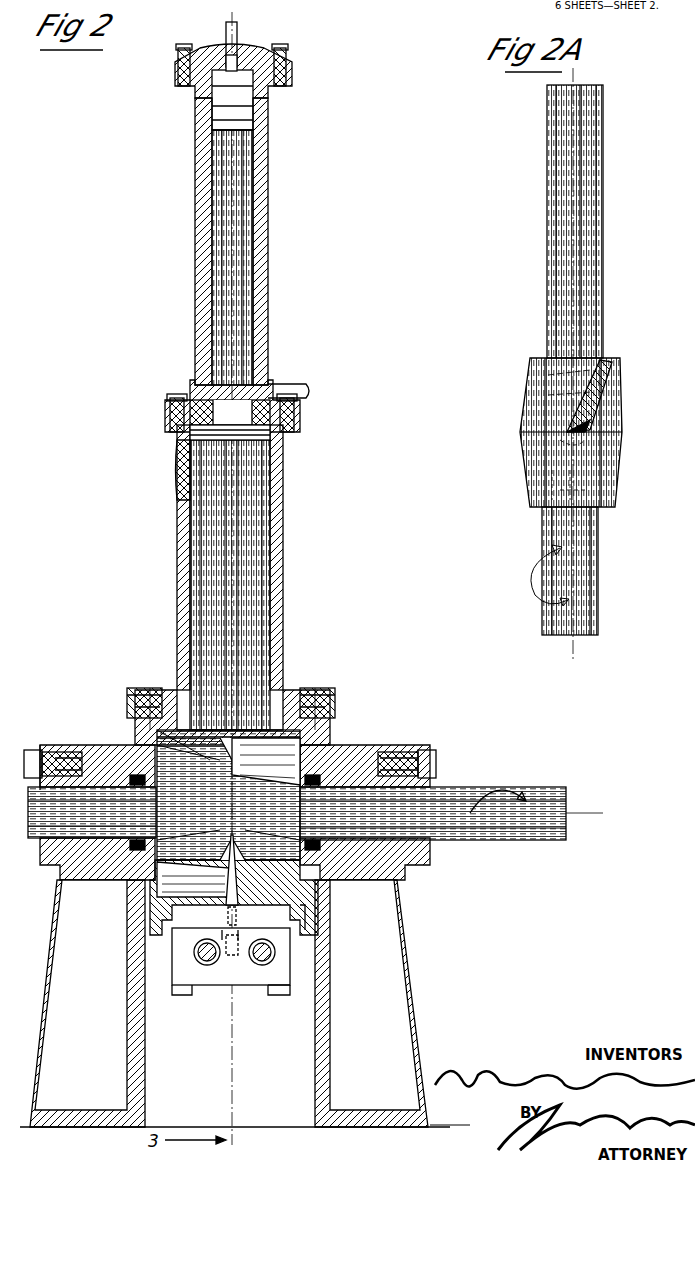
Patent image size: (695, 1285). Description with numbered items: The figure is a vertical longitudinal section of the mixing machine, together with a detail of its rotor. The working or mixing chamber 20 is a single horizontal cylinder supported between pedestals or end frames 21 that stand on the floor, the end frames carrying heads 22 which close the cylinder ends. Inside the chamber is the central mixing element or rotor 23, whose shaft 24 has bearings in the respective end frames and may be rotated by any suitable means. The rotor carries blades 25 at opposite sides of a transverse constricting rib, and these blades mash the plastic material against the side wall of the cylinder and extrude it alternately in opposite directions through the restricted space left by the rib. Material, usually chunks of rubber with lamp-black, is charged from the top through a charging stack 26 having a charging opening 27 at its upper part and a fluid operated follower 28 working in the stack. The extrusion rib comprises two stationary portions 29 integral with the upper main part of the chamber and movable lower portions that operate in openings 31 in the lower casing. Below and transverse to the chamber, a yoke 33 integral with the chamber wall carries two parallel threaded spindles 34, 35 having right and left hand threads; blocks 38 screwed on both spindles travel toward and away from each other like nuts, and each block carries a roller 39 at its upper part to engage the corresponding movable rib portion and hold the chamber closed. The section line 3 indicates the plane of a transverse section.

In FIG. 2, the axis / section line 3 is at (220, 586).
In FIG. 2, the working or mixing chamber 20 is at (300, 928).
In FIG. 2, the pedestals or end frames 21 is at (229, 1003).
In FIG. 2, the heads 22 is at (135, 692).
In FIG. 2, the mixing element or rotor 23 is at (228, 795).
In FIG. 2A, the mixing element or rotor 23 is at (571, 432).
In FIG. 2, the shaft 24 is at (315, 813).
In FIG. 2A, the shaft 24 is at (567, 360).
In FIG. 2, the blades 25 is at (228, 817).
In FIG. 2A, the blades 25 is at (598, 402).
In FIG. 2, the charging stack 26 is at (285, 548).
In FIG. 2, the charging opening 27 is at (178, 478).
In FIG. 2, the fluid operated follower 28 is at (255, 432).
In FIG. 2, the stationary rib portions 29 is at (162, 736).
In FIG. 2, the openings 31 is at (230, 915).
In FIG. 2, the yoke 33 is at (282, 968).
In FIG. 2, the threaded spindle 34 is at (200, 965).
In FIG. 2, the threaded spindle 35 is at (272, 975).
In FIG. 2, the blocks 38 is at (258, 965).
In FIG. 2, the roller 39 is at (192, 938).